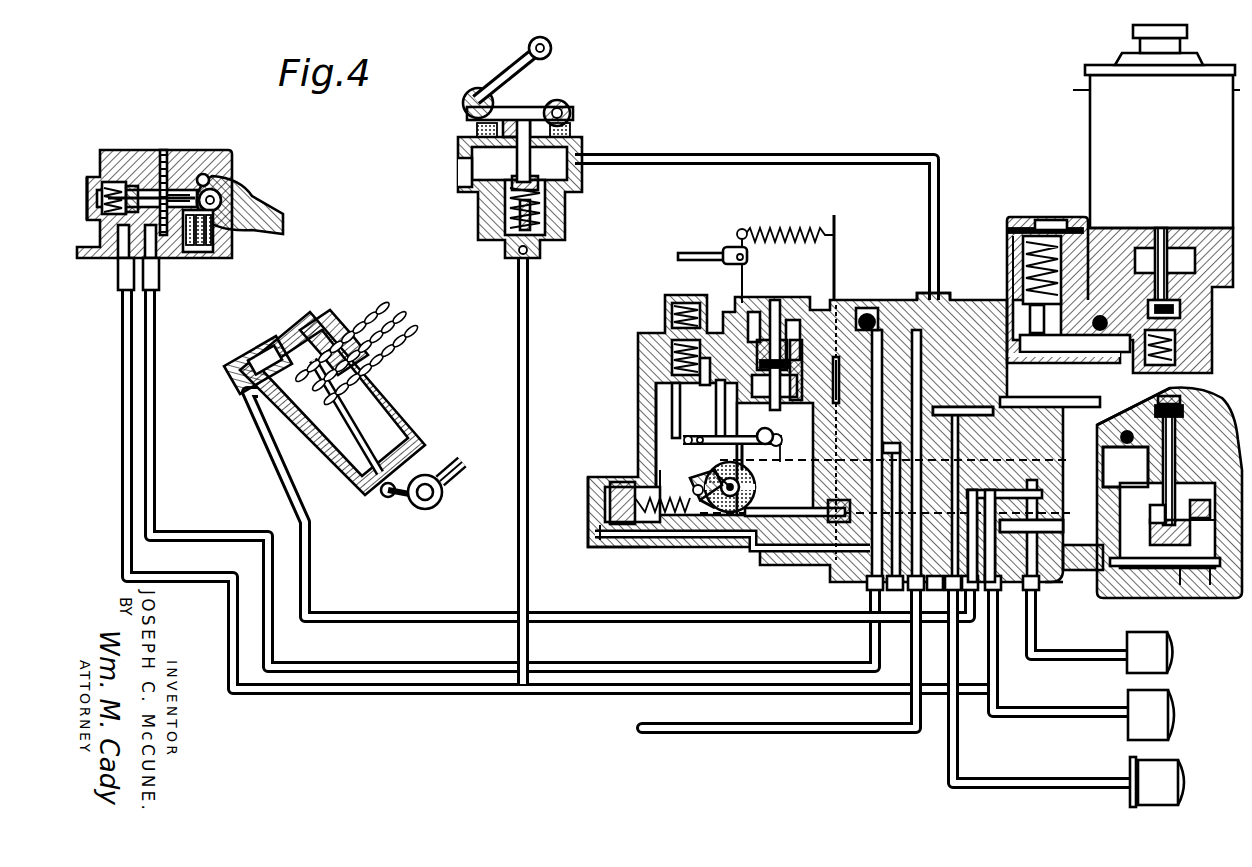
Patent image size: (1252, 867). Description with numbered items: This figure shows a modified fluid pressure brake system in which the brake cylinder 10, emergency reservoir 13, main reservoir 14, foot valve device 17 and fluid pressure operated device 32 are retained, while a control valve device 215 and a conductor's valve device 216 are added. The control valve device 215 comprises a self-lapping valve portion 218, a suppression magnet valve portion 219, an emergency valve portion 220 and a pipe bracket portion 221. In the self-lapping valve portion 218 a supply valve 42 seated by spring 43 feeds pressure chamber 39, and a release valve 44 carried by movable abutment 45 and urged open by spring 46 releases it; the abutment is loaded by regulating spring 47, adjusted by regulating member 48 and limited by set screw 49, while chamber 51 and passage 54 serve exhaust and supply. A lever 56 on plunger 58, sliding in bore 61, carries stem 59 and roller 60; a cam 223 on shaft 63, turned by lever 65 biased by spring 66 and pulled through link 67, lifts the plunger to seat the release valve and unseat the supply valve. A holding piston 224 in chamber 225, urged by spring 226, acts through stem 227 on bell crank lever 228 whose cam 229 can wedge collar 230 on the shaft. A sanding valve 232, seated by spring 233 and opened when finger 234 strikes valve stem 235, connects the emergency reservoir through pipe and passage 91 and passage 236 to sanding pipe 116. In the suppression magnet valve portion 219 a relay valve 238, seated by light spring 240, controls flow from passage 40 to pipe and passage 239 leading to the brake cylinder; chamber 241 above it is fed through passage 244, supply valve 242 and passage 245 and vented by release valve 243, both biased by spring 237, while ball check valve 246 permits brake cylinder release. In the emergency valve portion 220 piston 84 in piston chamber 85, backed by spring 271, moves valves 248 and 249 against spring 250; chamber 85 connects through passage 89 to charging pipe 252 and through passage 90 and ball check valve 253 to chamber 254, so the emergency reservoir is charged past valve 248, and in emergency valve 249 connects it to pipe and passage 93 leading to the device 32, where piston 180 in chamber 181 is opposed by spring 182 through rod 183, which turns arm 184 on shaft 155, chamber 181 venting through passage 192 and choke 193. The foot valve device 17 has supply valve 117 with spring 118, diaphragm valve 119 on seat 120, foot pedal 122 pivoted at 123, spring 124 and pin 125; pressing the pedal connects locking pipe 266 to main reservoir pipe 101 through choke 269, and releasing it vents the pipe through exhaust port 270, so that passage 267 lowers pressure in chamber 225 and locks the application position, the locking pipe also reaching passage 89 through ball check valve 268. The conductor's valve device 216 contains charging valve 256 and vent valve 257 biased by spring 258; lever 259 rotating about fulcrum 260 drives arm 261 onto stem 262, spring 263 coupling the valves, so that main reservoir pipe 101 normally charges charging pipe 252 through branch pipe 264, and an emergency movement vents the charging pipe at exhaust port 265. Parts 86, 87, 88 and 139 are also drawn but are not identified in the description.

The brake cylinder 10 is at (1180, 783).
The emergency reservoir 13 is at (1170, 648).
The main reservoir 14 is at (1170, 708).
The foot valve device 17 is at (216, 150).
The fluid pressure operated device 32 is at (336, 300).
The pressure chamber 39 is at (665, 420).
The passage 40 is at (961, 342).
The supply valve 42 is at (672, 350).
The spring 43 is at (672, 316).
The release valve 44 is at (778, 445).
The movable abutment 45 is at (814, 380).
The spring 46 is at (770, 438).
The regulating spring 47 is at (795, 330).
The regulating member 48 is at (770, 332).
The set screw 49 is at (768, 322).
The chamber 51 is at (808, 352).
The passage 54 is at (990, 490).
The lever 56 is at (716, 416).
The plunger 58 is at (745, 458).
The stem 59 is at (684, 410).
The roller 60 is at (780, 455).
The bore 61 is at (700, 378).
The shaft 63 is at (730, 497).
The lever 65 is at (736, 275).
The spring 66 is at (808, 232).
The link 67 is at (718, 254).
The piston 84 is at (1180, 586).
The piston chamber 85 is at (1210, 586).
The valve 86 is at (1160, 535).
The valve seat 87 is at (1197, 520).
The chamber 88 is at (1200, 498).
The passage 89 is at (937, 390).
The passage 90 is at (1128, 452).
The pipe and passage 91 is at (1035, 608).
The pipe and passage 93 is at (445, 600).
The main reservoir pipe 101 is at (122, 322).
The sanding pipe 116 is at (805, 728).
The supply valve 117 is at (122, 182).
The spring 118 is at (92, 180).
The diaphragm valve 119 is at (177, 133).
The seat 120 is at (140, 205).
The foot pedal 122 is at (270, 222).
The pivot 123 is at (208, 178).
The spring 124 is at (200, 250).
The pin 125 is at (220, 197).
The passage 139 is at (965, 490).
The shaft 155 is at (450, 478).
The piston 180 is at (352, 350).
The chamber 181 is at (317, 306).
The spring 182 is at (385, 400).
The rod 183 is at (396, 425).
The arm 184 is at (392, 494).
The passage 192 is at (240, 340).
The choke 193 is at (236, 345).
The control valve device 215 is at (893, 300).
The conductor's valve device 216 is at (584, 143).
The self-lapping valve portion 218 is at (645, 548).
The suppression magnet valve portion 219 is at (1088, 137).
The emergency valve portion 220 is at (1196, 450).
The pipe bracket portion 221 is at (953, 298).
The cam 223 is at (752, 482).
The piston 224 is at (608, 488).
The chamber 225 is at (612, 510).
The spring 226 is at (645, 495).
The stem 227 is at (660, 470).
The bell crank lever 228 is at (704, 480).
The cam 229 is at (708, 470).
The collar 230 is at (712, 505).
The sanding valve 232 is at (836, 522).
The spring 233 is at (842, 508).
The finger 234 is at (728, 515).
The valve stem 235 is at (775, 518).
The passage 236 is at (1040, 535).
The spring 237 is at (1192, 372).
The relay valve 238 is at (1020, 268).
The pipe and passage 239 is at (1020, 357).
The light spring 240 is at (1040, 240).
The chamber 241 is at (1030, 228).
The supply valve 242 is at (1166, 310).
The release valve 243 is at (1160, 230).
The passage 244 is at (1140, 252).
The passage 245 is at (1085, 232).
The ball check valve 246 is at (1098, 324).
The valve 248 is at (1182, 428).
The valve 249 is at (1176, 470).
The spring 250 is at (1182, 402).
The charging pipe 252 is at (790, 156).
The ball check valve 253 is at (1118, 436).
The chamber 254 is at (1135, 410).
The charging valve 256 is at (538, 255).
The vent valve 257 is at (560, 185).
The spring 258 is at (548, 204).
The lever 259 is at (520, 72).
The fulcrum 260 is at (478, 100).
The arm 261 is at (552, 112).
The stem 262 is at (515, 158).
The spring 263 is at (492, 207).
The branch pipe 264 is at (530, 326).
The exhaust port 265 is at (460, 165).
The locking pipe 266 is at (405, 665).
The passage 267 is at (620, 545).
The ball check valve 268 is at (863, 318).
The choke 269 is at (118, 284).
The exhaust port 270 is at (135, 182).
The spring 271 is at (1160, 520).